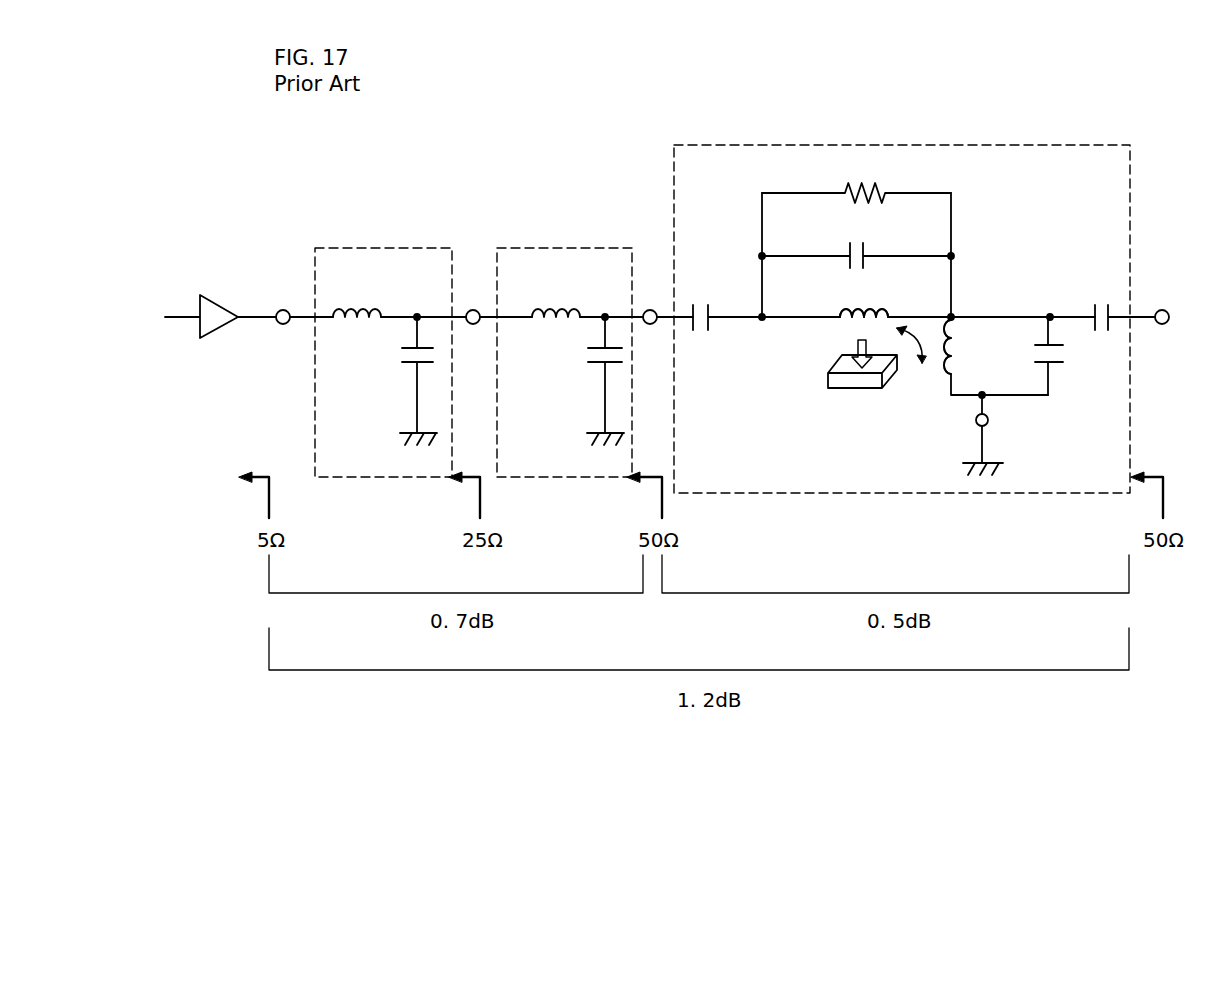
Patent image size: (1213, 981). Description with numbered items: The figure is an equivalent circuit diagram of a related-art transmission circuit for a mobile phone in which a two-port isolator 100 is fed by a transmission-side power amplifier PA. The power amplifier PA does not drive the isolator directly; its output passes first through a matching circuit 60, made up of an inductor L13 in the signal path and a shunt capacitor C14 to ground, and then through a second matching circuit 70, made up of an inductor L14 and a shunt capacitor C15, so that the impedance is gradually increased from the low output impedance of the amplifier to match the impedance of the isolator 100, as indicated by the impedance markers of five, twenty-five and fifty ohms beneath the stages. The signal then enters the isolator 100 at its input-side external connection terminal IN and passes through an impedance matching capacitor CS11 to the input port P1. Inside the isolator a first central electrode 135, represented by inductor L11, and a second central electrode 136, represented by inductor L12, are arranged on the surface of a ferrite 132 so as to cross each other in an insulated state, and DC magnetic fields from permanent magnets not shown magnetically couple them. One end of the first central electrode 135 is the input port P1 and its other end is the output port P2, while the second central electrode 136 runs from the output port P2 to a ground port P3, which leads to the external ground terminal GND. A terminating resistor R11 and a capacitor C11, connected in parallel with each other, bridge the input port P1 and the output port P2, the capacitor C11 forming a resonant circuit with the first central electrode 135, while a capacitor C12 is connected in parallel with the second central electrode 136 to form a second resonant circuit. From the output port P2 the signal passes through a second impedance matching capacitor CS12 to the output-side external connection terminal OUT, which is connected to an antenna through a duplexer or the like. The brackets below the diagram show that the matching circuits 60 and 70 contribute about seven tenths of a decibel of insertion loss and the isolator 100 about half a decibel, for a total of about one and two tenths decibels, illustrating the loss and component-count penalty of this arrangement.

The matching circuit 60 is at (390, 340).
The matching circuit 70 is at (570, 340).
The isolator 100 is at (1098, 145).
The ferrite 132 is at (852, 388).
The first central electrode 135 is at (840, 309).
The second central electrode 136 is at (945, 380).
The power amplifier PA is at (218, 305).
The inductor L13 is at (357, 297).
The capacitor C14 is at (395, 381).
The inductor L14 is at (556, 297).
The capacitor C15 is at (584, 381).
The input-side external connection terminal IN is at (647, 301).
The impedance matching capacitor CS11 is at (722, 298).
The input port P1 is at (760, 320).
The terminating resistor R11 is at (856, 178).
The capacitor C11 is at (856, 239).
The inductor L11 is at (856, 298).
The inductor L12 is at (996, 357).
The ground port P3 is at (983, 394).
The ground external connection terminal GND is at (1001, 435).
The capacitor C12 is at (1072, 356).
The output port P2 is at (1050, 315).
The impedance matching capacitor CS12 is at (1114, 299).
The output-side external connection terminal OUT is at (1161, 299).